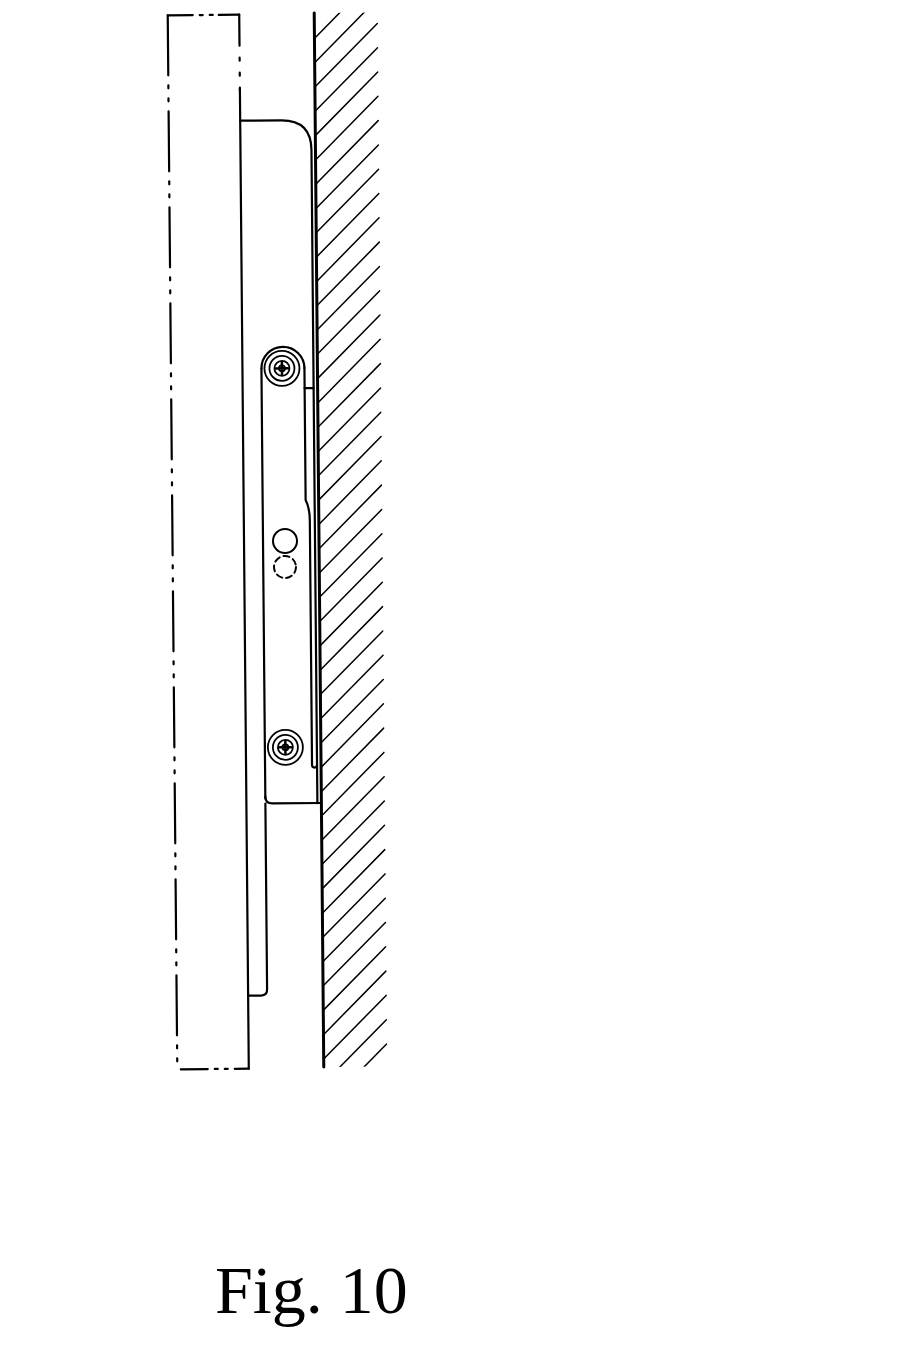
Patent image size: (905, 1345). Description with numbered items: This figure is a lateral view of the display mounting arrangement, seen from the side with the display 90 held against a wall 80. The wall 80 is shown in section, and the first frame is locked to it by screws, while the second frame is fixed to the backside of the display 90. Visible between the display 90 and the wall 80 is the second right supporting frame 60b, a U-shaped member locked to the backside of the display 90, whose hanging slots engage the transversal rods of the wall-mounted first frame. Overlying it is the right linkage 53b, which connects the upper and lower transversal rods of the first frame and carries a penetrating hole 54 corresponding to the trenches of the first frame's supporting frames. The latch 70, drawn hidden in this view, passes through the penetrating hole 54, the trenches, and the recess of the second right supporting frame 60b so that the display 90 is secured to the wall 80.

The display 90 is at (170, 540).
The wall 80 is at (353, 75).
The second right supporting frame 60b is at (295, 211).
The right linkage 53b is at (298, 483).
The penetrating hole 54 is at (297, 541).
The latch 70 is at (296, 567).